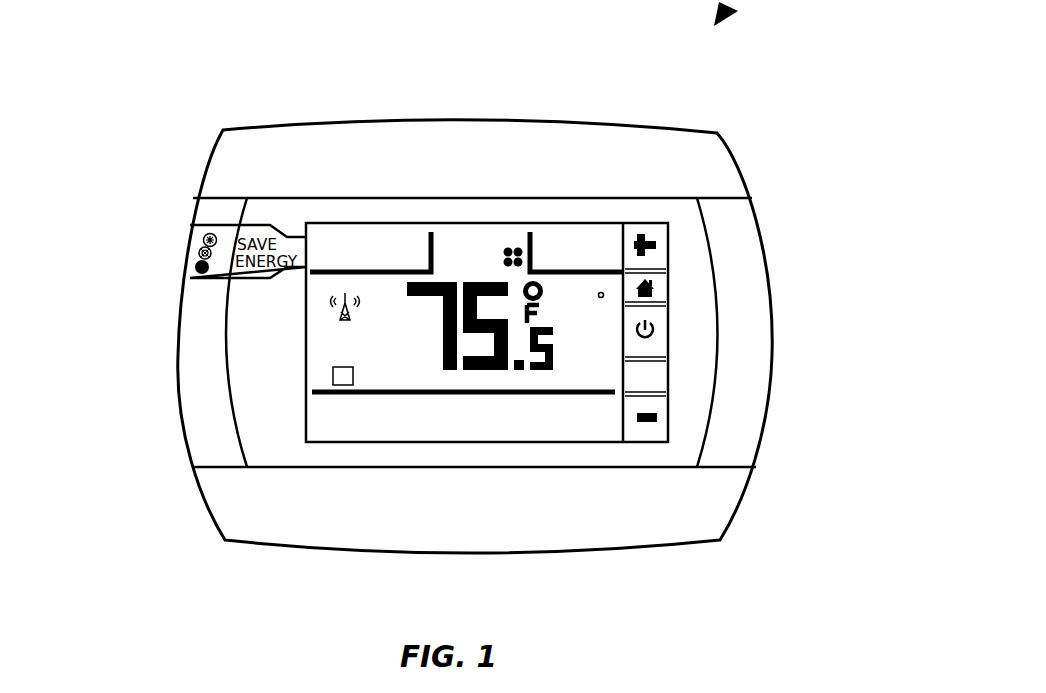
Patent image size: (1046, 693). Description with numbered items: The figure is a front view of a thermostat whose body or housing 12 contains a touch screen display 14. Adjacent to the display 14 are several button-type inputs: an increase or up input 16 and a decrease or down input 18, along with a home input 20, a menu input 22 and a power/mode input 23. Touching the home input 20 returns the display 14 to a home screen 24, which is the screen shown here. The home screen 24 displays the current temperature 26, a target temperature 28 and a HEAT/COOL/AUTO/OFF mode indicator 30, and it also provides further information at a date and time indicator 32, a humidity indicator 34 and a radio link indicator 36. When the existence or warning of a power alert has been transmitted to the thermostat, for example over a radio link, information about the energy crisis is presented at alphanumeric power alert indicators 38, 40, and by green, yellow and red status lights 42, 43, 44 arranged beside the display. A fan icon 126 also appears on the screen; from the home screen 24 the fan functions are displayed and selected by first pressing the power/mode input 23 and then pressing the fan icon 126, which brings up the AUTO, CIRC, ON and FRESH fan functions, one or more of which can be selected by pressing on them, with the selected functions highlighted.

The housing 12 is at (712, 505).
The touch screen display 14 is at (605, 205).
The increase input 16 is at (657, 247).
The decrease input 18 is at (663, 423).
The home input 20 is at (660, 285).
The menu input 22 is at (672, 377).
The power/mode input 23 is at (665, 325).
The home screen 24 is at (482, 248).
The current temperature 26 is at (440, 355).
The target temperature 28 is at (593, 302).
The mode indicator 30 is at (557, 385).
The date and time indicator 32 is at (578, 225).
The humidity indicator 34 is at (612, 338).
The radio link indicator 36 is at (333, 315).
The alphanumeric power alert indicator 38 is at (414, 236).
The alphanumeric power alert indicator 40 is at (353, 413).
The green status light 42 is at (200, 235).
The yellow status light 43 is at (198, 250).
The red status light 44 is at (197, 267).
The fan icon 126 is at (513, 242).